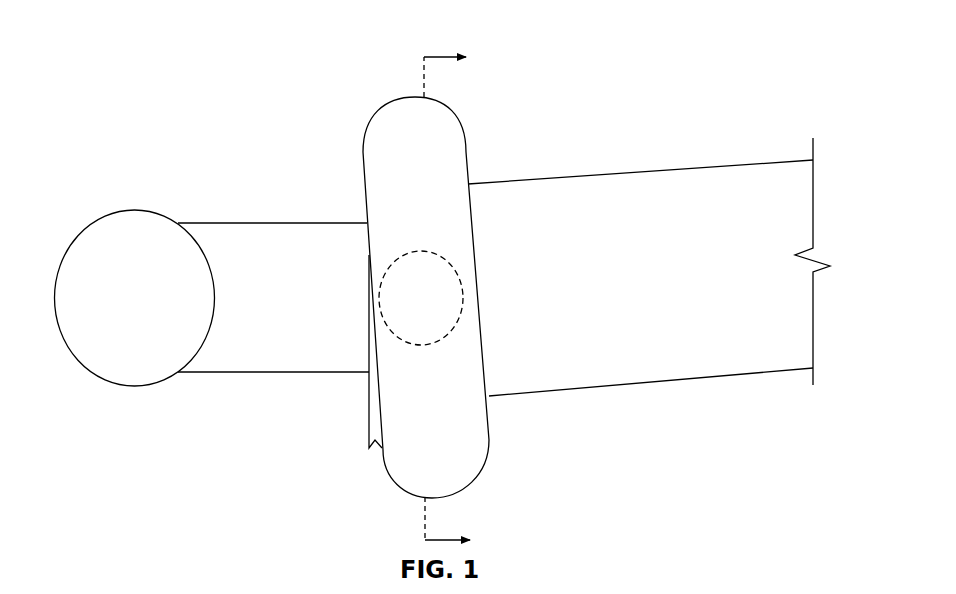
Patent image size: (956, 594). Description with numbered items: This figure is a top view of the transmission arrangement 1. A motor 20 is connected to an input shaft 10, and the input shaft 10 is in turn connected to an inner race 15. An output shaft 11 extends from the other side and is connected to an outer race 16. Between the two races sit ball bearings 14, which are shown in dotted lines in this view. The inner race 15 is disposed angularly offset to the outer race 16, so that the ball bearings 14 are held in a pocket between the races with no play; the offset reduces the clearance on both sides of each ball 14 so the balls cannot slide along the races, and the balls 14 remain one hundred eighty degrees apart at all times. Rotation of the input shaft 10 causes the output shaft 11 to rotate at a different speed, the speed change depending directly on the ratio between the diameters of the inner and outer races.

The transmission arrangement 1 is at (392, 74).
The input shaft 10 is at (317, 223).
The output shaft 11 is at (720, 166).
The ball bearing 14 is at (430, 250).
The inner race 15 is at (368, 441).
The outer race 16 is at (390, 102).
The motor 20 is at (136, 210).